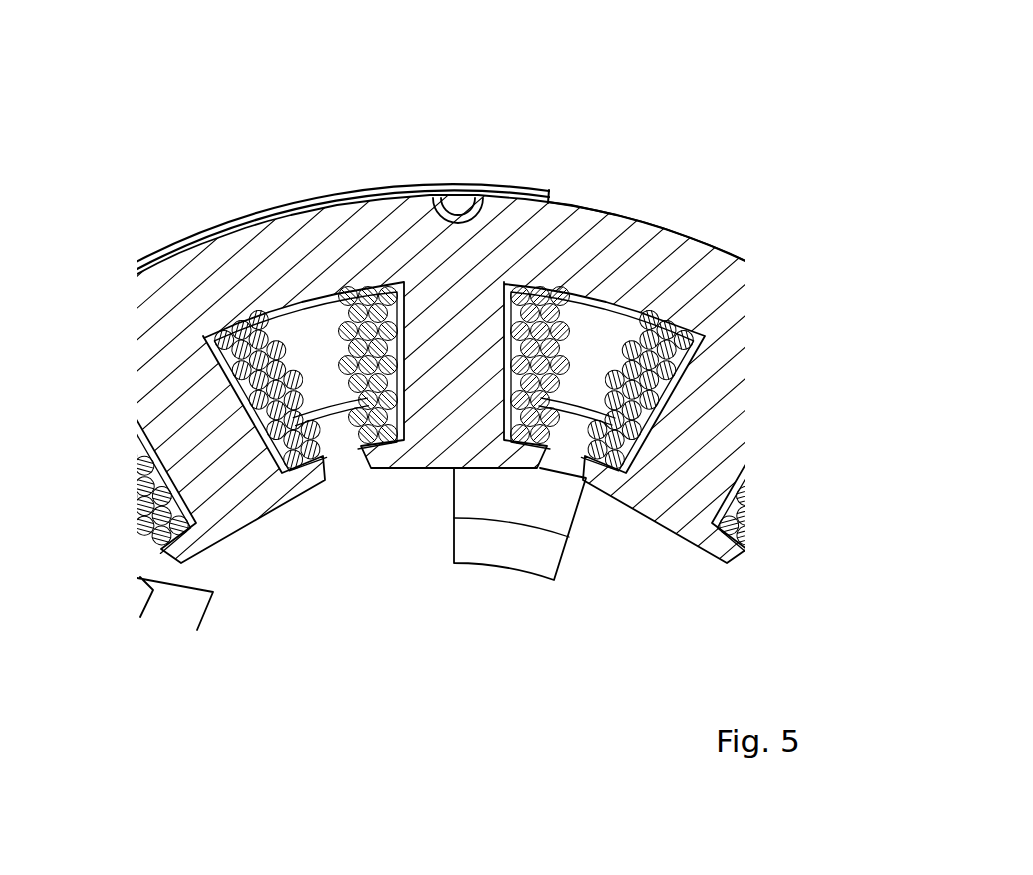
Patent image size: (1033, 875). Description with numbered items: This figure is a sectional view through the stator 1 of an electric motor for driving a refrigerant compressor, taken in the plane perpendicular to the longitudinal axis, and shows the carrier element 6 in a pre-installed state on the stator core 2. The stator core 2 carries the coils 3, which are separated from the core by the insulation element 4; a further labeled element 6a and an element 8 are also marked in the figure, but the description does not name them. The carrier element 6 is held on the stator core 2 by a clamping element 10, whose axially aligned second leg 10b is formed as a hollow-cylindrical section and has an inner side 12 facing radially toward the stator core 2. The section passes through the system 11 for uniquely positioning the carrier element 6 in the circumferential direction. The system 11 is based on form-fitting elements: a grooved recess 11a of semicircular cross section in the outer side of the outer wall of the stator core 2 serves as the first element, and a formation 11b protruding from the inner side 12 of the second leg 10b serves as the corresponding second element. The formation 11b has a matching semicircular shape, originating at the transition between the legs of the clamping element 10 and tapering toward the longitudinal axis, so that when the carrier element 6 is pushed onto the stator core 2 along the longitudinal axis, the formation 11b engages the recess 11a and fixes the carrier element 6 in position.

The stator 1 is at (836, 114).
The stator core 2 is at (160, 307).
The coils 3 is at (383, 300).
The insulation element 4 is at (662, 403).
The carrier element 6 is at (316, 337).
The slot interior 6a is at (331, 411).
The rotor segment 8 is at (500, 548).
The clamping element 10 is at (263, 212).
The second leg 10b is at (340, 224).
The system for positioning the carrier element 11 is at (423, 160).
The recess 11a is at (617, 217).
The formation 11b is at (458, 205).
The inner side 12 is at (548, 197).